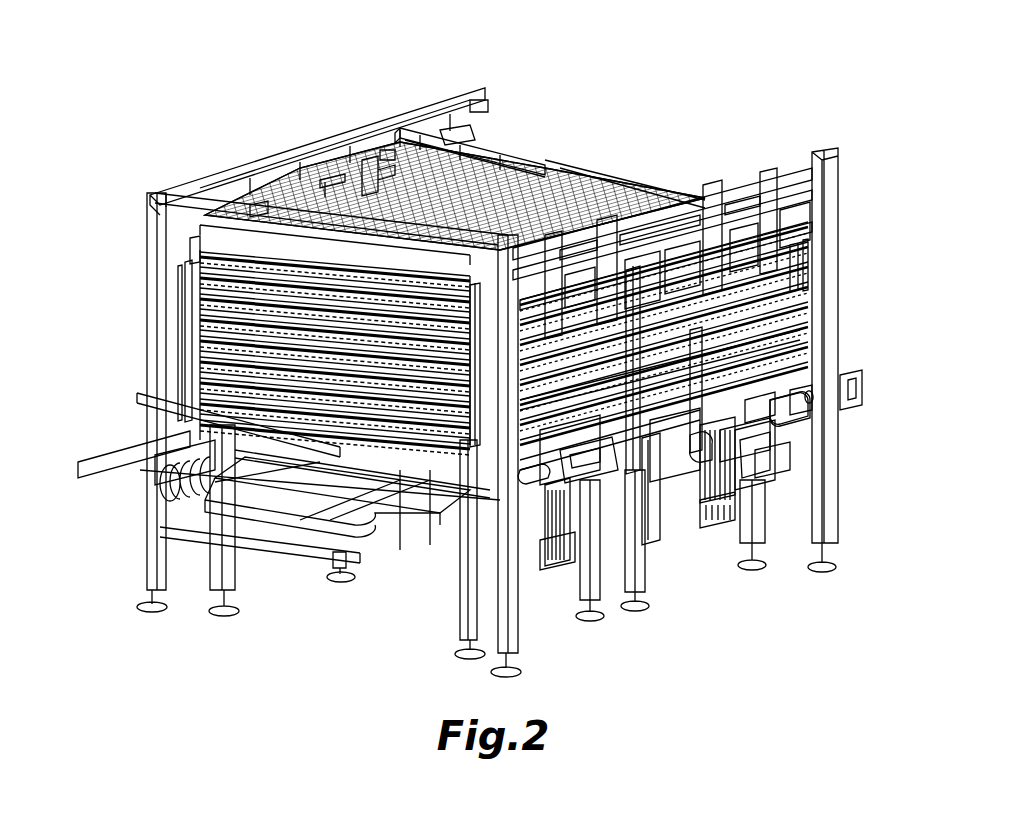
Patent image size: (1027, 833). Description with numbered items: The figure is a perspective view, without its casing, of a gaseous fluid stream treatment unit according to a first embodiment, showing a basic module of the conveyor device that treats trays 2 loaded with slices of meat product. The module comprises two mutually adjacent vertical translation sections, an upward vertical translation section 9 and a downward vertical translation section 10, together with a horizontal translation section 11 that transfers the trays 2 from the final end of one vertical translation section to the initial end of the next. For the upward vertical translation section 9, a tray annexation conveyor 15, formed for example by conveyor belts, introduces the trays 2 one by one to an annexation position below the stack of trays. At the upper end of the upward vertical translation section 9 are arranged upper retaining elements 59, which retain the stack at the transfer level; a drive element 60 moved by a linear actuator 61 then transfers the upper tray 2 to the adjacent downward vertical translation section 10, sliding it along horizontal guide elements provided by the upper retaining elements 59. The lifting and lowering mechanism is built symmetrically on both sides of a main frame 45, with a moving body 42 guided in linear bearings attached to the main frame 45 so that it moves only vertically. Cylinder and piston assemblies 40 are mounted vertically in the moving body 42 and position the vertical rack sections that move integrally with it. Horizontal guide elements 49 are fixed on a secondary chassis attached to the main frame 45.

The downward vertical translation section 10 is at (412, 88).
The upward vertical translation section 9 is at (256, 152).
The tray 2 is at (314, 194).
The upper retaining elements 59 is at (374, 172).
The drive element 60 is at (506, 156).
The horizontal translation section 11 is at (548, 148).
The linear actuator 61 is at (200, 310).
The main frame 45 is at (822, 298).
The horizontal guide elements 49 is at (804, 410).
The moving body 42 is at (746, 456).
The cylinder and piston assemblies 40 is at (710, 515).
The tray annexation conveyor 15 is at (347, 531).